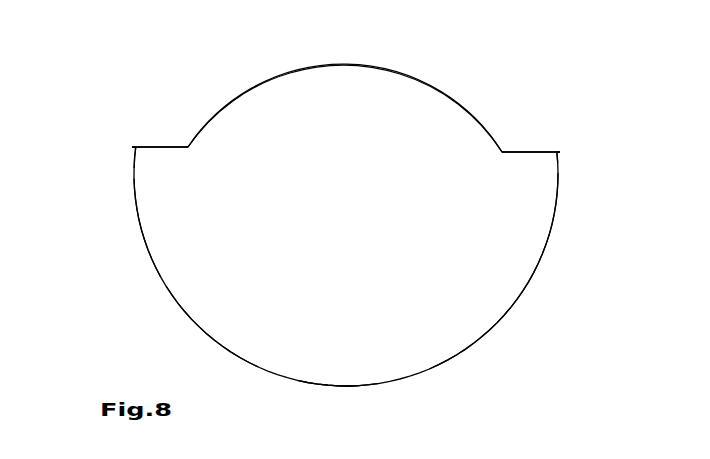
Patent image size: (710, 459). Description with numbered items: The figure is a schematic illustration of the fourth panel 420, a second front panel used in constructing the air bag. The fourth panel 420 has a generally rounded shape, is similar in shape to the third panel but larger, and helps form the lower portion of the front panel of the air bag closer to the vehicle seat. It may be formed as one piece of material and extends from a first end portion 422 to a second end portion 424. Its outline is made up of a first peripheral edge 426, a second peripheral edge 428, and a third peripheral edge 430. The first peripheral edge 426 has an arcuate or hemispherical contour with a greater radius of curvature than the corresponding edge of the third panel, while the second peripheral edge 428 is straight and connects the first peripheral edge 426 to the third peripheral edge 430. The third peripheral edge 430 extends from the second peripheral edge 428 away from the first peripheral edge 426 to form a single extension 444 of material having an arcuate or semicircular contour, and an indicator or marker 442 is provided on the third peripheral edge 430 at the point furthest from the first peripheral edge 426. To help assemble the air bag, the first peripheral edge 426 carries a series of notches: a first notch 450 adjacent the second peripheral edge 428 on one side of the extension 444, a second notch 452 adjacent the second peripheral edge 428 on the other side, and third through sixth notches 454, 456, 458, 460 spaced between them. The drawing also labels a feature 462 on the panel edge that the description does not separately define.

The fourth panel 420 is at (435, 383).
The first end portion 422 is at (325, 390).
The second end portion 424 is at (446, 77).
The first peripheral edge 426 is at (513, 310).
The second peripheral edge 428 is at (163, 147).
The third peripheral edge 430 is at (253, 88).
The indicator or marker 442 is at (345, 66).
The extension 444 is at (442, 143).
The first notch 450 is at (131, 153).
The second notch 452 is at (562, 155).
The third notch 454 is at (158, 265).
The fourth notch 456 is at (250, 365).
The fifth notch 458 is at (343, 387).
The sixth notch 460 is at (473, 347).
The right upper wall 462 is at (532, 267).